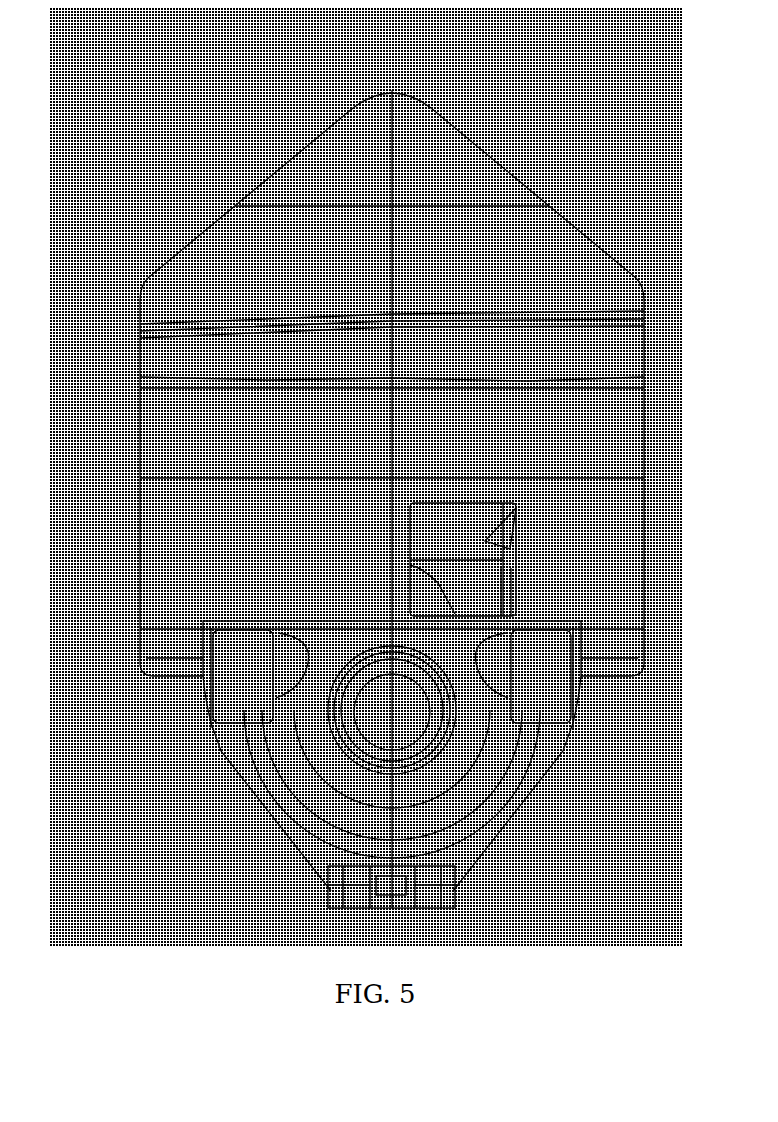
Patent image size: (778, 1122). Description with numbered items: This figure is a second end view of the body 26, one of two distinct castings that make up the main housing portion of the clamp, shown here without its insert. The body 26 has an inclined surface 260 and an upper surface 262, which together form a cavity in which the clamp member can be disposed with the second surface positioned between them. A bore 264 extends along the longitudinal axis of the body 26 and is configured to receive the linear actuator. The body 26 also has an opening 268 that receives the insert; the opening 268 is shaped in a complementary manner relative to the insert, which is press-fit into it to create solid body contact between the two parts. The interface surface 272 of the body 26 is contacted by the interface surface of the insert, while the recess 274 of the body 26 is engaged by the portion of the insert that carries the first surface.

The body 26 is at (270, 106).
The inclined surface 260 is at (390, 200).
The interface surface 272 is at (388, 440).
The recess 274 is at (487, 535).
The opening 268 is at (475, 568).
The upper surface 262 is at (245, 612).
The bore 264 is at (375, 700).